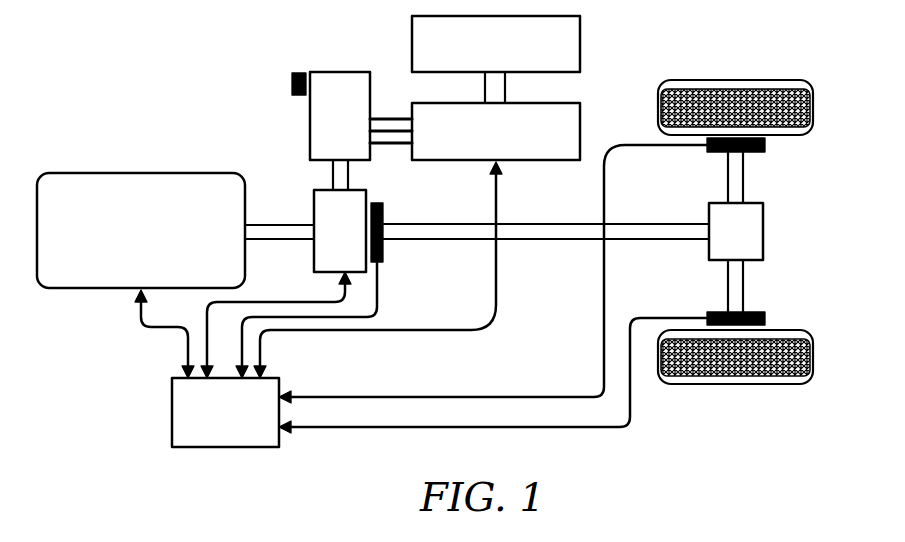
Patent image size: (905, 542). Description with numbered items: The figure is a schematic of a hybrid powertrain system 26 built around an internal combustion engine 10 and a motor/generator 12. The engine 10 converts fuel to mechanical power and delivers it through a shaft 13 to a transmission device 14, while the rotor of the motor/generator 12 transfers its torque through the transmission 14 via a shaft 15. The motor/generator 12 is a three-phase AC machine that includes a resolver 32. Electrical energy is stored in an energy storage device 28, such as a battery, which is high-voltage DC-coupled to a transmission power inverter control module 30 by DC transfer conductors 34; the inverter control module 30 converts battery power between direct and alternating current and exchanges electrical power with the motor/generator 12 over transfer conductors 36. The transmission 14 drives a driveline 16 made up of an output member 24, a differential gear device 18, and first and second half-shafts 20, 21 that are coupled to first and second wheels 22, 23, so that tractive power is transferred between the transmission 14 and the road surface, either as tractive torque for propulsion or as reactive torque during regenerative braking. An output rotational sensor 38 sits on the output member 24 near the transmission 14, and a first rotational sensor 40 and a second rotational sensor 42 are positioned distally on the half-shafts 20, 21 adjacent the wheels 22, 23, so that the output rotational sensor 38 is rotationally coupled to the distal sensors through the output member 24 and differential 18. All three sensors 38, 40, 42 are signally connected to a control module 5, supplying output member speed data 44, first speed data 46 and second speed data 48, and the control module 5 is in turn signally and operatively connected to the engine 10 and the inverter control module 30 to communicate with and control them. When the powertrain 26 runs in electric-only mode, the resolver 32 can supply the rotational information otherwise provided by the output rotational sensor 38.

The control module 5 is at (218, 426).
The internal combustion engine 10 is at (126, 249).
The motor/generator 12 is at (326, 130).
The shaft 13 is at (279, 225).
The transmission device 14 is at (326, 246).
The shaft 15 is at (332, 182).
The driveline 16 is at (682, 262).
The differential gear device 18 is at (722, 246).
The first half-shaft 20 is at (745, 170).
The second half-shaft 21 is at (745, 295).
The first wheel 22 is at (772, 80).
The second wheel 23 is at (767, 384).
The output member 24 is at (573, 240).
The hybrid powertrain system 26 is at (258, 126).
The energy storage device 28 is at (482, 58).
The transmission power inverter control module 30 is at (482, 146).
The resolver 32 is at (293, 80).
The DC transfer conductors 34 is at (507, 88).
The transfer conductors 36 is at (389, 118).
The output rotational sensor 38 is at (384, 211).
The first rotational sensor 40 is at (766, 145).
The second rotational sensor 42 is at (766, 318).
The output member speed data 44 is at (380, 283).
The first speed data 46 is at (604, 200).
The second speed data 48 is at (633, 398).